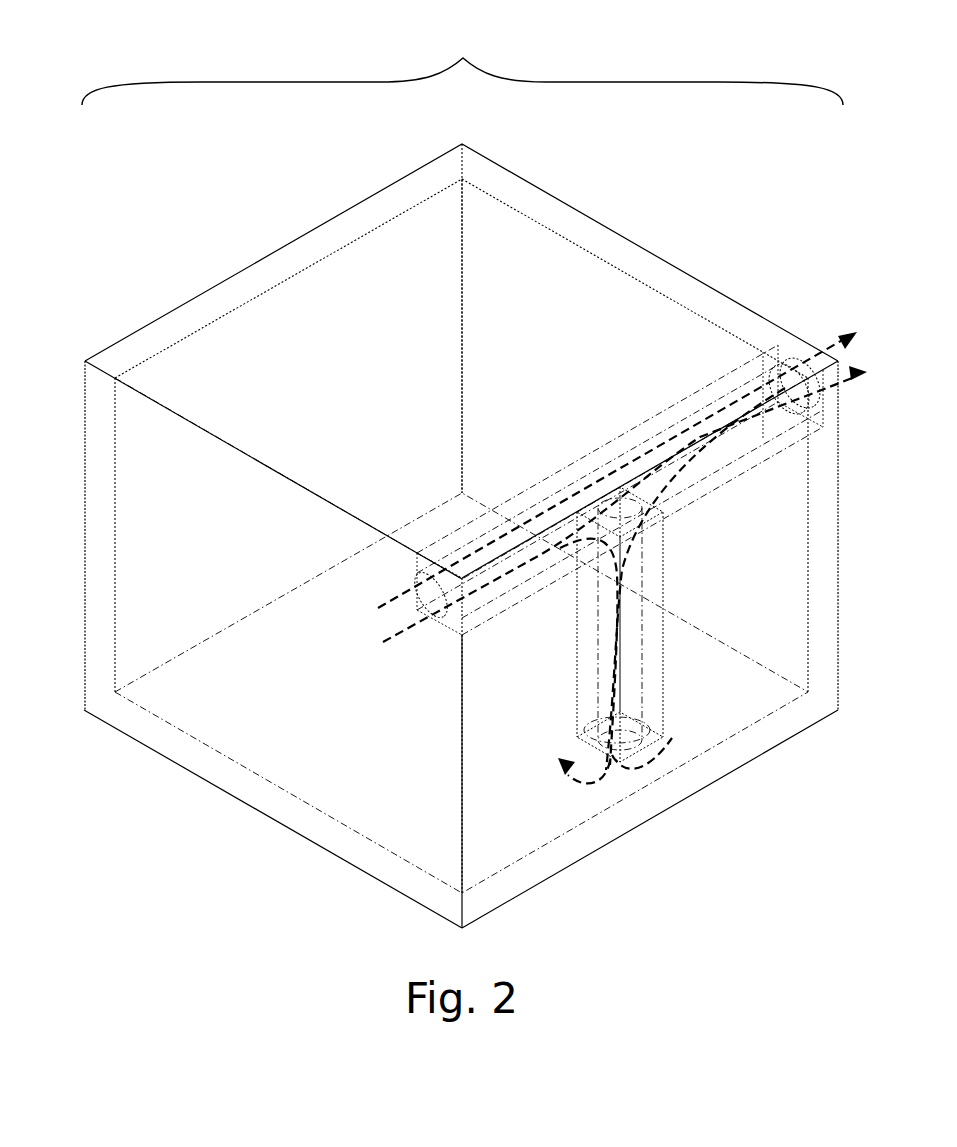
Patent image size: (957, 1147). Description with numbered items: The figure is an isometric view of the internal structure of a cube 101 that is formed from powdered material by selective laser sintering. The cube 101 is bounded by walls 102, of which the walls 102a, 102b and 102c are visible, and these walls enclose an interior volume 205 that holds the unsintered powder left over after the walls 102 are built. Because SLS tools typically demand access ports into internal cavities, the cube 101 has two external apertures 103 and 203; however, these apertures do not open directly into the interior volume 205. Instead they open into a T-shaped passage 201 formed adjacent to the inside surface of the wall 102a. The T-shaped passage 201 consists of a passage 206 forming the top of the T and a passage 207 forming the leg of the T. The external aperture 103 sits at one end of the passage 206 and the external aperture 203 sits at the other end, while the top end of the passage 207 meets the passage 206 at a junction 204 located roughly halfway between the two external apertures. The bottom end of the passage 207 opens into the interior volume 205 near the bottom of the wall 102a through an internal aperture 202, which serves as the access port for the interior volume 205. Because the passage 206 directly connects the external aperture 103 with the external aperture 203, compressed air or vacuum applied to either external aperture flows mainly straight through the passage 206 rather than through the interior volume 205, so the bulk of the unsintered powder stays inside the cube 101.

The cube 101 is at (462, 63).
The walls 102 is at (461, 541).
The wall 102a is at (485, 818).
The wall 102b is at (188, 897).
The wall 102c is at (162, 388).
The external aperture 103 is at (422, 583).
The T-shaped passage 201 is at (723, 450).
The internal aperture 202 is at (620, 747).
The external aperture 203 is at (790, 370).
The junction 204 is at (627, 507).
The interior volume 205 is at (355, 320).
The passage 206 is at (483, 540).
The passage 207 is at (635, 642).